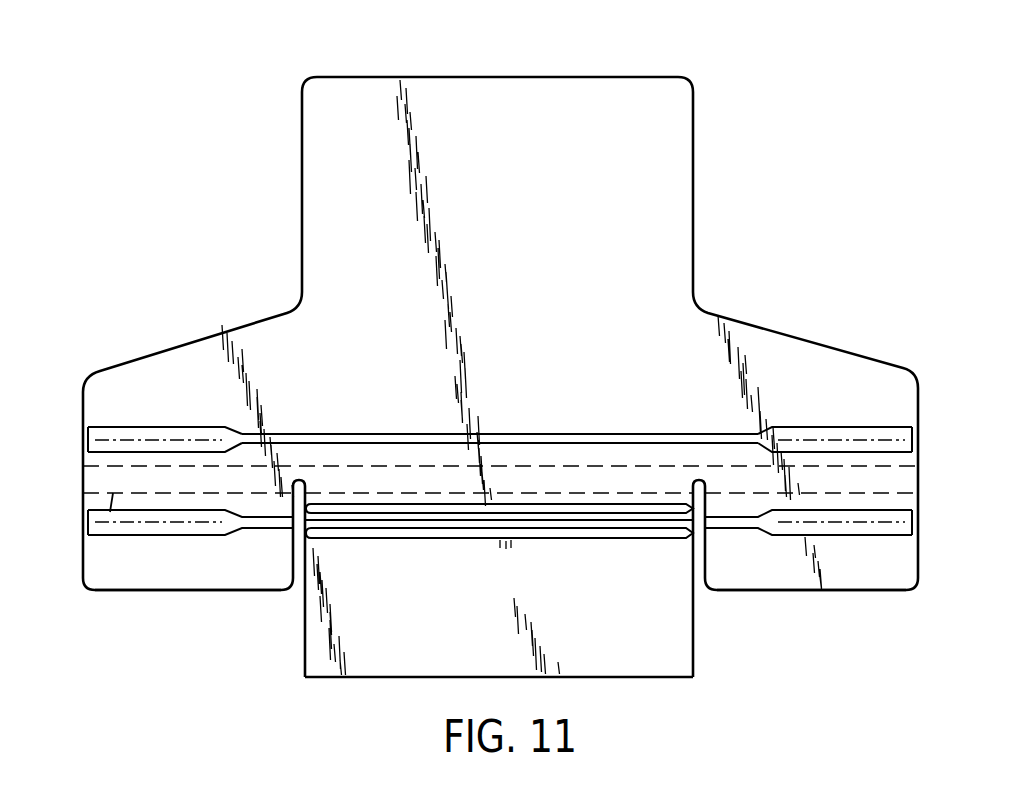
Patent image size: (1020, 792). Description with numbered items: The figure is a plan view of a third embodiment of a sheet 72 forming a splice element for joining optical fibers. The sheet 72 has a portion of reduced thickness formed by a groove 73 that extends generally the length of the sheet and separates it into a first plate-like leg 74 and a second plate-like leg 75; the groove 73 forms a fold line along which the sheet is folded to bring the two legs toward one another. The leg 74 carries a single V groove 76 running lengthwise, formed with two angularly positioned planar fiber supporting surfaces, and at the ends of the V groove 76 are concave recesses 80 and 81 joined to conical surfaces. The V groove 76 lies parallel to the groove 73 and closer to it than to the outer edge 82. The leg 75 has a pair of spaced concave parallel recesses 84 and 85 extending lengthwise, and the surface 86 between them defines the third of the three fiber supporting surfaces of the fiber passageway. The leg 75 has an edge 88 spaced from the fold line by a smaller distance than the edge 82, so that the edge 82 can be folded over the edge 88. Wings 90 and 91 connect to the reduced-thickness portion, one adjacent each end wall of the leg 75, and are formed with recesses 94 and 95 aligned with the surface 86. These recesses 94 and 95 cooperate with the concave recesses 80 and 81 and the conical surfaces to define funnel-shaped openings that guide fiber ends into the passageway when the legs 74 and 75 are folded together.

The sheet 72 is at (697, 200).
The groove 73 is at (98, 538).
The first plate-like member or leg 74 is at (693, 250).
The second plate-like member or leg 75 is at (693, 651).
The V groove 76 is at (401, 433).
The concave recess 80 is at (805, 432).
The concave recess 81 is at (178, 428).
The edge 82 is at (440, 77).
The concave recess 84 is at (366, 540).
The concave recess 85 is at (433, 508).
The third fiber supporting surface 86 is at (515, 527).
The edge 88 is at (360, 677).
The wing 90 is at (831, 592).
The wing 91 is at (157, 590).
The recess 94 is at (824, 527).
The recess 95 is at (183, 528).